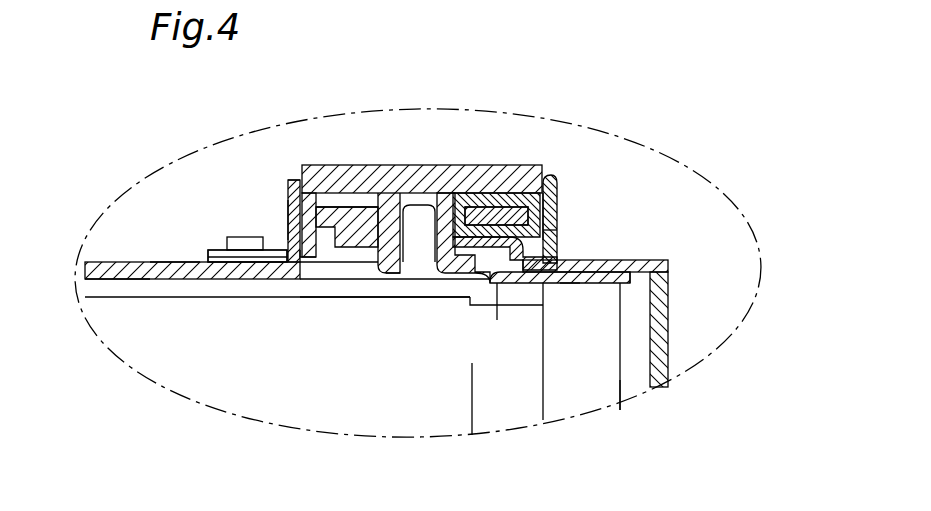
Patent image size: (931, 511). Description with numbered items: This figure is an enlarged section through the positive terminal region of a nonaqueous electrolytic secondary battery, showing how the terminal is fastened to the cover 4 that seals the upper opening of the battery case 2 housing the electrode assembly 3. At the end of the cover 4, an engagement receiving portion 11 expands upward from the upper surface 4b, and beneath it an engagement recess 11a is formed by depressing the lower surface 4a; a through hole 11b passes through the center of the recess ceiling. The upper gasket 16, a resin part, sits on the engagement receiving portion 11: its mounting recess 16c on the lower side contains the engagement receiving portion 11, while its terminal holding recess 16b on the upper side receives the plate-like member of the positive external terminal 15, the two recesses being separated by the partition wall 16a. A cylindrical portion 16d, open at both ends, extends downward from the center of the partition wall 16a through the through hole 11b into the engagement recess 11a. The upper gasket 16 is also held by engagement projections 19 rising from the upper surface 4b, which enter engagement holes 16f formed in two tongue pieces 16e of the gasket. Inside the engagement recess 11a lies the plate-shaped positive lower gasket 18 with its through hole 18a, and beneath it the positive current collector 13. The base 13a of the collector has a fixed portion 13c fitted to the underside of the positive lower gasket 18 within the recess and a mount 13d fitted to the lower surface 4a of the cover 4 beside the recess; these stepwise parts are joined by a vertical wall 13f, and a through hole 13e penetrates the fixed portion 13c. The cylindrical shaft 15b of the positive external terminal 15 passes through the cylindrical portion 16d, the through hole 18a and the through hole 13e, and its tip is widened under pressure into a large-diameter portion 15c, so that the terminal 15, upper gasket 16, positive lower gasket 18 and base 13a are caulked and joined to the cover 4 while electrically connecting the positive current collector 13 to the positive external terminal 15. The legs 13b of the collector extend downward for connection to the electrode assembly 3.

The battery case 2 is at (666, 352).
The electrode assembly 3 is at (345, 418).
The cover 4 is at (125, 252).
The lower surface 4a is at (118, 281).
The upper surface 4b is at (172, 260).
The engagement receiving portion 11 is at (557, 224).
The engagement recess 11a is at (557, 194).
The through hole 11b is at (470, 207).
The positive current collector 13 is at (627, 385).
The base 13a is at (636, 289).
The legs 13b is at (591, 397).
The fixed portion 13c is at (480, 280).
The mount 13d is at (570, 283).
The through hole 13e is at (423, 262).
The vertical wall 13f is at (497, 283).
The positive external terminal 15 is at (371, 158).
The cylindrical shaft 15b is at (322, 175).
The large-diameter portion 15c is at (385, 272).
The upper gasket 16 is at (279, 178).
The partition wall 16a is at (293, 188).
The terminal holding recess 16b is at (543, 210).
The mounting recess 16c is at (558, 252).
The cylindrical portion 16d is at (293, 217).
The tongue pieces 16e is at (250, 256).
The engagement holes 16f is at (247, 256).
The positive lower gasket 18 is at (508, 197).
The through hole 18a is at (455, 207).
The engagement projections 19 is at (237, 248).